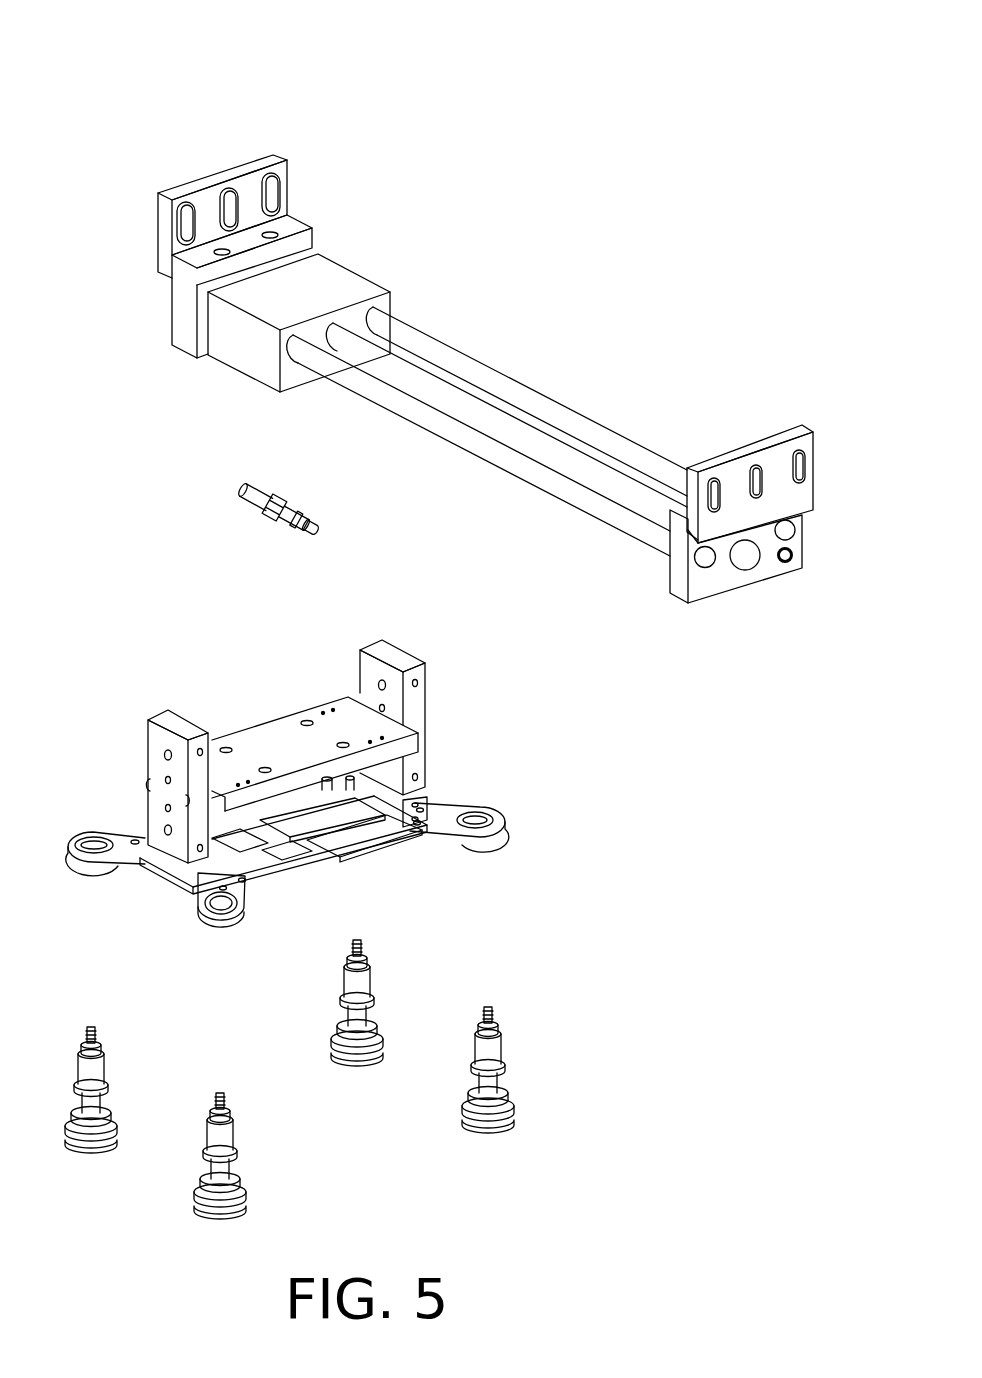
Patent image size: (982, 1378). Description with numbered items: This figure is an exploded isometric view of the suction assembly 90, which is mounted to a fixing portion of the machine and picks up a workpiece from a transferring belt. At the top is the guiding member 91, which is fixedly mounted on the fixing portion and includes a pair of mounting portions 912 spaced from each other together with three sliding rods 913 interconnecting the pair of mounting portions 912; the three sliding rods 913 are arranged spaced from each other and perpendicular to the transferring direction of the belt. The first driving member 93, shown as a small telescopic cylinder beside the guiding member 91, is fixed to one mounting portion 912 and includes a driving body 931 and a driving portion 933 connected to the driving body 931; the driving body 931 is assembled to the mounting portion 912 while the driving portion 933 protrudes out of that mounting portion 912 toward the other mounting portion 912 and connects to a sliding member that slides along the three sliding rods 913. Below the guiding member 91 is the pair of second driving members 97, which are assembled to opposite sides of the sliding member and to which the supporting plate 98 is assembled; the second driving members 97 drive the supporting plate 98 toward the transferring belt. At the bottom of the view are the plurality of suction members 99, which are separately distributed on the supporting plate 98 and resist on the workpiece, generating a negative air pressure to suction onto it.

The suction assembly 90 is at (508, 56).
The guiding member 91 is at (683, 283).
The mounting portions 912 is at (720, 460).
The sliding rods 913 is at (597, 430).
The first driving member 93 is at (205, 565).
The driving body 931 is at (258, 508).
The driving portion 933 is at (300, 532).
The second driving members 97 is at (413, 707).
The supporting plate 98 is at (333, 860).
The suction members 99 is at (490, 1085).